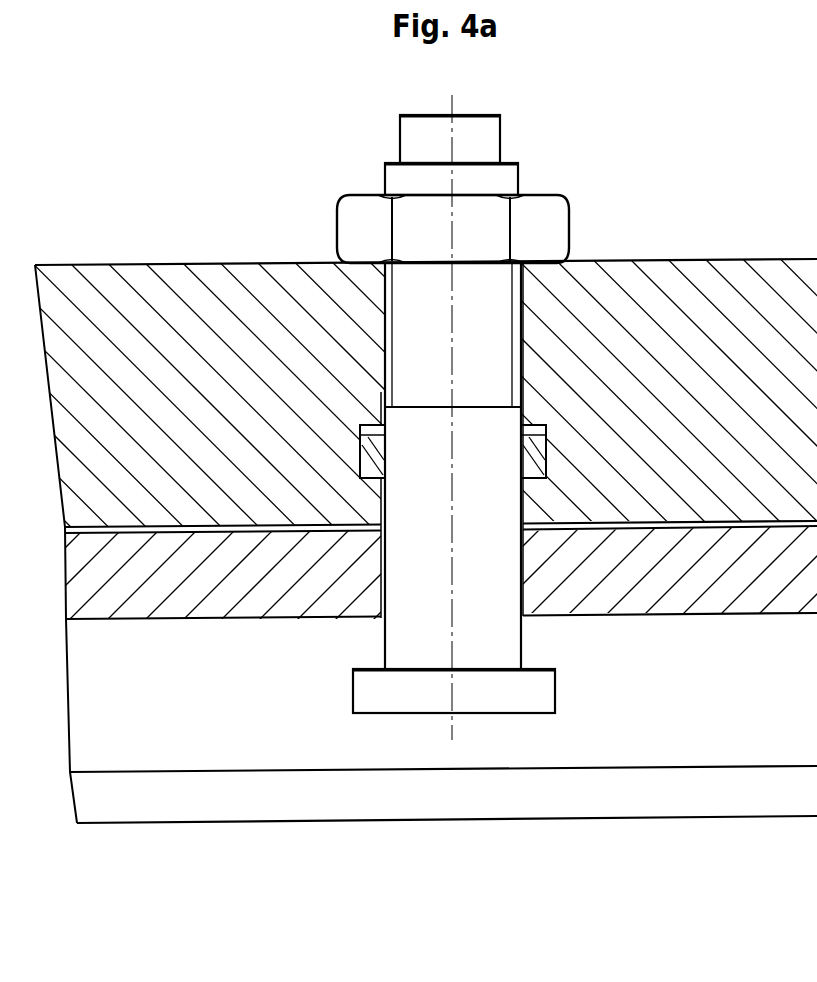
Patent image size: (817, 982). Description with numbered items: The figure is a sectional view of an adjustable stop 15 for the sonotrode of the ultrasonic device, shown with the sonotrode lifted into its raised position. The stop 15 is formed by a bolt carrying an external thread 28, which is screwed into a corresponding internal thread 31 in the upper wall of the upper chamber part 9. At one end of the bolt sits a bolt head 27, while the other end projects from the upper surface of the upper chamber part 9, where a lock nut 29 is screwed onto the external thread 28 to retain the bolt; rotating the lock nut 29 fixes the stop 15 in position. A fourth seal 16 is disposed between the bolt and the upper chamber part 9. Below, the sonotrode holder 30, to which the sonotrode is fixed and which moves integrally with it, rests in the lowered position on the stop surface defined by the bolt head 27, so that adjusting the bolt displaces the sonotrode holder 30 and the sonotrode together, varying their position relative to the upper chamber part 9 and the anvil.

The upper chamber part 9 is at (193, 353).
The fourth seal 16 is at (352, 398).
The external thread 28 is at (376, 272).
The lock nut 29 is at (557, 230).
The internal thread 31 is at (527, 347).
The adjustable stop 15 is at (520, 498).
The bolt head 27 is at (508, 688).
The sonotrode holder 30 is at (268, 588).